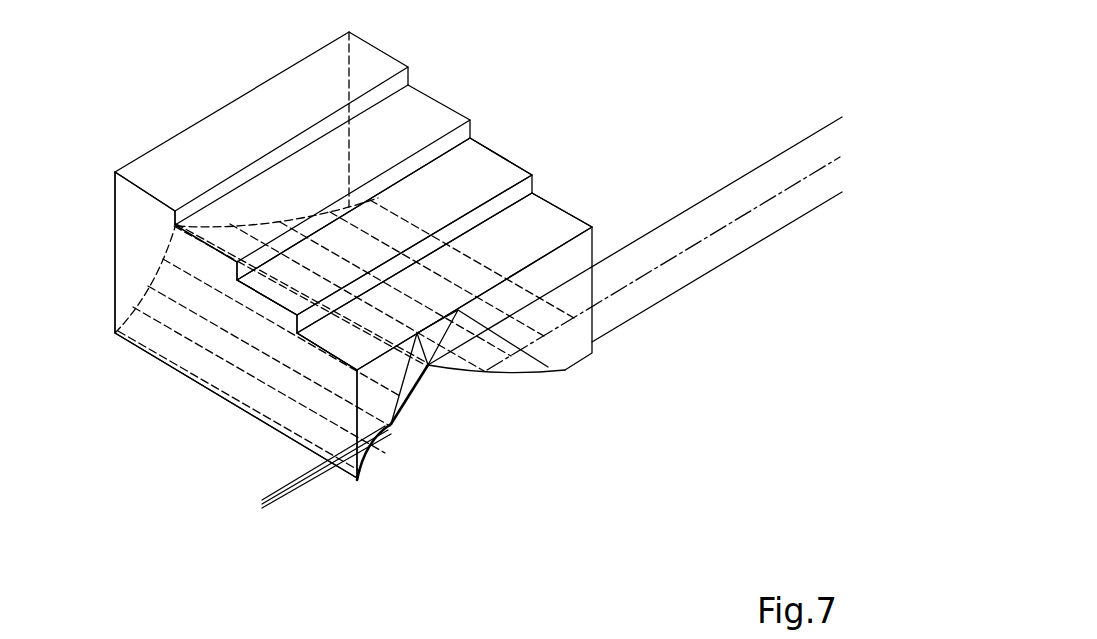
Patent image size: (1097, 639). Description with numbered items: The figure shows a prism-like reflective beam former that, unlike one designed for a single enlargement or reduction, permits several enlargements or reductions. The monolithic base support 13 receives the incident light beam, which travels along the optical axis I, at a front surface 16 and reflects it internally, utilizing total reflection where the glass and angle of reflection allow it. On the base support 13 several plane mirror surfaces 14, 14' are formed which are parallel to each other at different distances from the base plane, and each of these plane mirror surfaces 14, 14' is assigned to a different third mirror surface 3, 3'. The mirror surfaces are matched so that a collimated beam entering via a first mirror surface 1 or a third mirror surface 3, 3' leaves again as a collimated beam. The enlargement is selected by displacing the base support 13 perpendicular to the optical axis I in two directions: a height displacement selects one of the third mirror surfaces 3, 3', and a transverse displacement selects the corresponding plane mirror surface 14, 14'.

The base support 13 is at (162, 117).
The plane mirror surface 14 is at (444, 225).
The plane mirror surface 14' is at (384, 170).
The front surface 16 is at (125, 277).
The first mirror surface 1 is at (512, 373).
The third mirror surface 3 is at (469, 412).
The third mirror surface 3' is at (385, 498).
The optical axis I is at (262, 503).